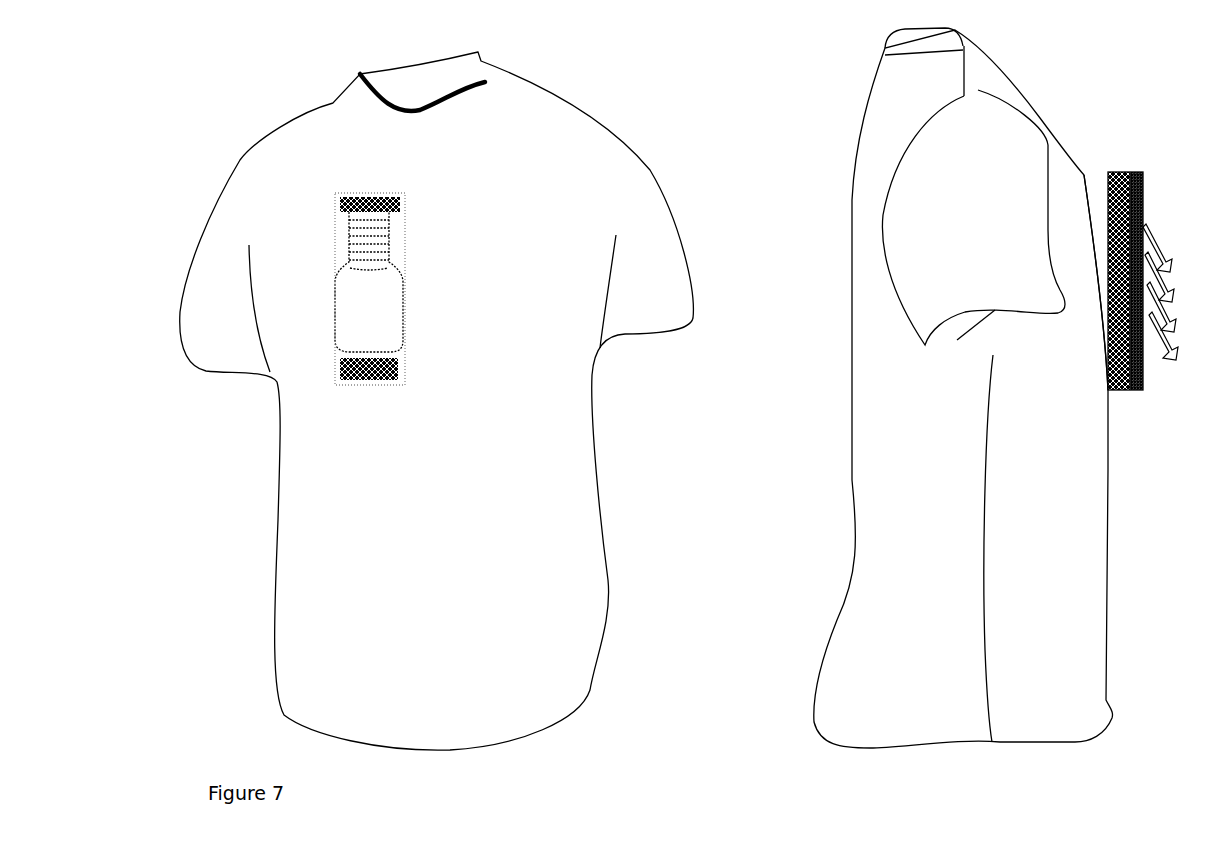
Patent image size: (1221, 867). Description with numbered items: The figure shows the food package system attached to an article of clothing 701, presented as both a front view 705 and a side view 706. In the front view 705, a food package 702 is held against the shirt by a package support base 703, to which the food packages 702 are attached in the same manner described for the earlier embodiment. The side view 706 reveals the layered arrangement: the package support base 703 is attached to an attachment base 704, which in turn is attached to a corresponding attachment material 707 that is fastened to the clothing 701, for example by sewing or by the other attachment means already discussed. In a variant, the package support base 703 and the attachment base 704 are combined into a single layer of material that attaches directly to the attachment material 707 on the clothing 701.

The clothing 701 is at (872, 62).
The food packages 702 is at (326, 246).
The package support base 703 is at (365, 405).
The attachment base 704 is at (1122, 158).
The front view 705 is at (437, 420).
The side view 706 is at (963, 404).
The attachment material 707 is at (1095, 160).